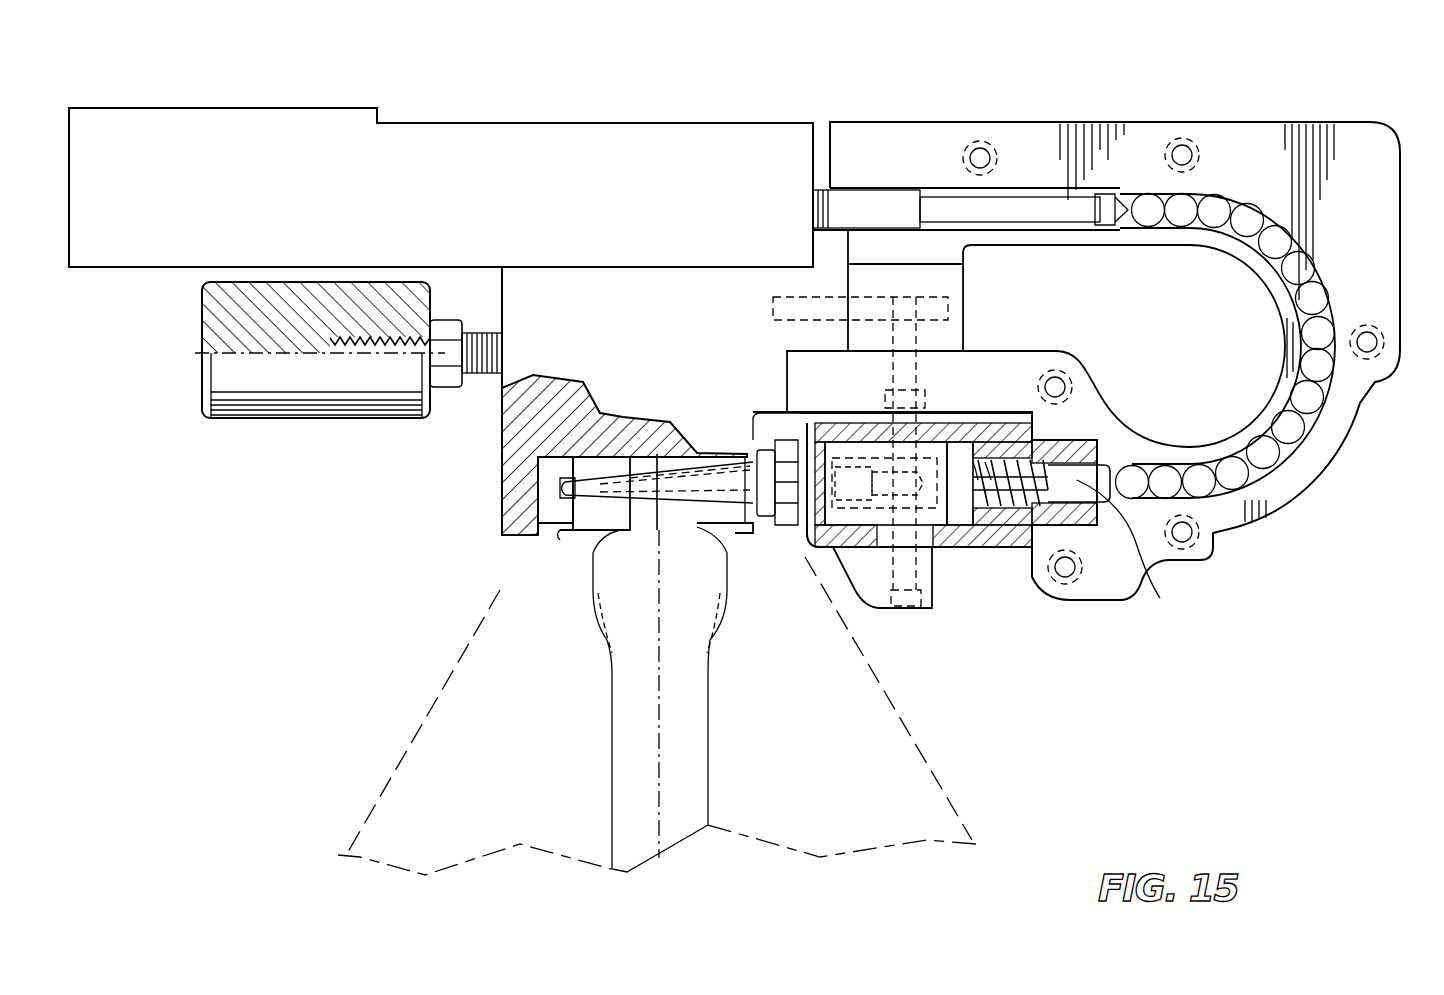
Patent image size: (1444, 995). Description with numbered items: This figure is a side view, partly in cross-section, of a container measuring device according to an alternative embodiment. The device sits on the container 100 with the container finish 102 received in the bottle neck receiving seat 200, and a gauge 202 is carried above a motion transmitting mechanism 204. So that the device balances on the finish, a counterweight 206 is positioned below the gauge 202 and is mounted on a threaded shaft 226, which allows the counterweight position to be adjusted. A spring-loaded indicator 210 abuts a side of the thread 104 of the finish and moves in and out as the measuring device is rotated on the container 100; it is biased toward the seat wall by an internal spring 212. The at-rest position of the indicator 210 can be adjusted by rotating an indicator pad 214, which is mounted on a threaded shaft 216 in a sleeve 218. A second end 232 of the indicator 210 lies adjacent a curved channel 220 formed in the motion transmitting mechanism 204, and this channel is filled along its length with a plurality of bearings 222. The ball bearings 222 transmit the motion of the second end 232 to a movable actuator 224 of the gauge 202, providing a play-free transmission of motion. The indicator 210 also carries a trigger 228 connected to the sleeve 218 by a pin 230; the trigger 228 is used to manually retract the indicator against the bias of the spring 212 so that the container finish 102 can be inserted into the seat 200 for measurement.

The container 100 is at (843, 753).
The container finish 102 is at (727, 532).
The thread 104 is at (590, 497).
The bottle neck receiving seat 200 is at (497, 512).
The gauge 202 is at (498, 216).
The motion transmitting mechanism 204 is at (1307, 498).
The counterweight 206 is at (290, 432).
The spring-loaded indicator 210 is at (790, 537).
The internal spring 212 is at (1000, 482).
The indicator pad 214 is at (752, 452).
The threaded shaft 216 is at (805, 462).
The sleeve 218 is at (952, 525).
The curved channel 220 is at (1310, 427).
The bearings 222 is at (1247, 220).
The movable actuator 224 is at (1018, 207).
The threaded shaft 226 is at (483, 370).
The trigger 228 is at (928, 513).
The pin 230 is at (913, 612).
The second end 232 is at (1149, 551).